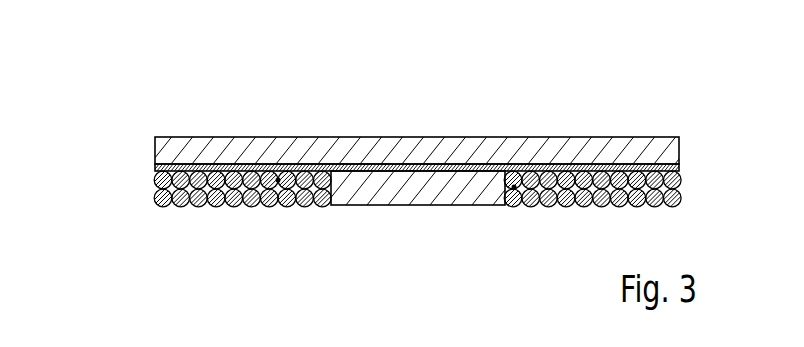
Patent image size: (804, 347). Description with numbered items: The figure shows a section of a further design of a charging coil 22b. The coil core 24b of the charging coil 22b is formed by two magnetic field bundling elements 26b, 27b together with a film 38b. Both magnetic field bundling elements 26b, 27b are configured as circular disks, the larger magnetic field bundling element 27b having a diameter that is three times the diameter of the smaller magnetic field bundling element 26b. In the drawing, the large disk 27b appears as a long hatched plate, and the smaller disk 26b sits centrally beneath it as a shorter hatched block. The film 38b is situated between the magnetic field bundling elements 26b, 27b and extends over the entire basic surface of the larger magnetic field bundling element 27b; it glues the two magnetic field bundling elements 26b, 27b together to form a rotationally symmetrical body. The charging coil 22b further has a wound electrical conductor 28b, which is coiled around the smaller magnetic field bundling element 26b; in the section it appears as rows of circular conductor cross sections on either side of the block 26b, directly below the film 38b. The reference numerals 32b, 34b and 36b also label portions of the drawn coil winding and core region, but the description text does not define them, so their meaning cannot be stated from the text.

The charging coil 22b is at (658, 82).
The coil core 24b is at (143, 151).
The magnetic field bundling element 26b is at (408, 192).
The magnetic field bundling element 27b is at (233, 148).
The wound electrical conductor 28b is at (213, 206).
The sphere layer 32b is at (143, 188).
The second group of spheres 34b is at (516, 186).
The sphere contact point 36b is at (276, 184).
The film 38b is at (318, 166).